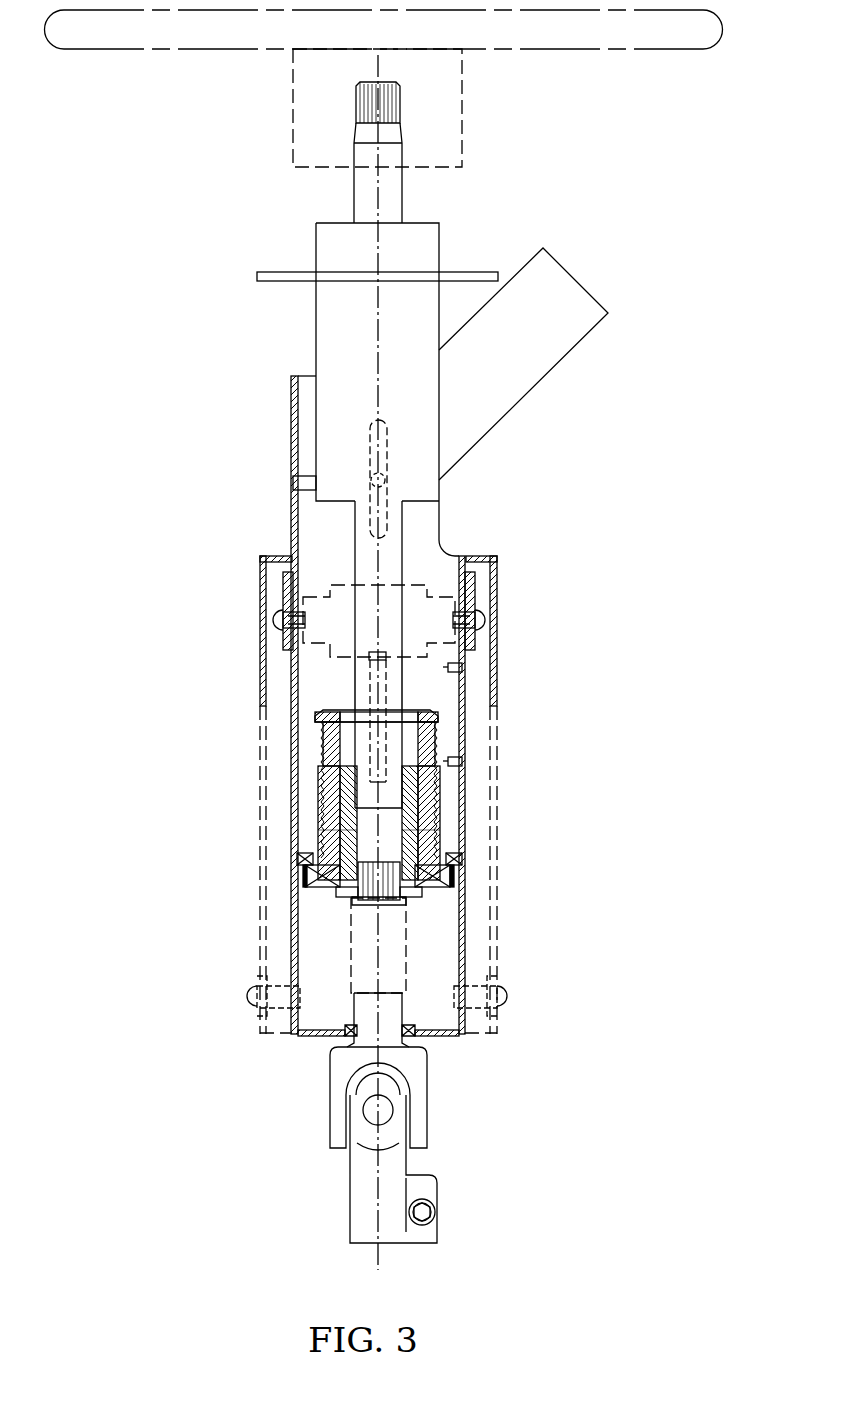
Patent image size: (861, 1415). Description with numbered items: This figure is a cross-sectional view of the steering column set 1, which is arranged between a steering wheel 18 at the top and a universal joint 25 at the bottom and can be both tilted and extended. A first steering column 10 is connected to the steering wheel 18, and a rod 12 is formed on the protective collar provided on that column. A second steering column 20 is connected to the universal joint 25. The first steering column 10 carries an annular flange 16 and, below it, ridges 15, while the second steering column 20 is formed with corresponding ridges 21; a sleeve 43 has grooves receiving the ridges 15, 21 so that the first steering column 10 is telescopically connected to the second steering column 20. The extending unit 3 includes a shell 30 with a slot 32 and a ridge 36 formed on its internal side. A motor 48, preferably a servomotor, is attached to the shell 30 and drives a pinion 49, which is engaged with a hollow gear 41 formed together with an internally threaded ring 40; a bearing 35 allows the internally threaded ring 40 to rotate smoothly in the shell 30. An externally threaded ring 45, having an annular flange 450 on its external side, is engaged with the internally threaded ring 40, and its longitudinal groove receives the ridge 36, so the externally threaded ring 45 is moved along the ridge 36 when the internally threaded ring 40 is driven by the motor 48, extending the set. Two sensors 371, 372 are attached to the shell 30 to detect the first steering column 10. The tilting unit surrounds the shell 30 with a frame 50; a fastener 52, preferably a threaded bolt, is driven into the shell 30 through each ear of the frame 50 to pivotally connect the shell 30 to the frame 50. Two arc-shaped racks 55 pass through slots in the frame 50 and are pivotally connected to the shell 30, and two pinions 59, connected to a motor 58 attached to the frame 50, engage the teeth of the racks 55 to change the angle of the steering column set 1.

The steering column set 1 is at (287, 328).
The extending unit 3 is at (378, 813).
The first steering column 10 is at (358, 548).
The rod 12 is at (378, 480).
The ridges 15 is at (345, 790).
The annular flange 16 is at (360, 692).
The steering wheel 18 is at (607, 44).
The second steering column 20 is at (398, 1013).
The ridges 21 is at (352, 903).
The universal joint 25 is at (450, 1167).
The shell 30 is at (465, 818).
The slot 32 is at (370, 445).
The bearing 35 is at (452, 858).
The ridge 36 is at (370, 668).
The internally threaded ring 40 is at (320, 808).
The gear 41 is at (303, 873).
The sleeve 43 is at (320, 837).
The externally threaded ring 45 is at (432, 742).
The motor 48 is at (406, 935).
The pinion 49 is at (402, 898).
The frame 50 is at (262, 742).
The fastener 52 is at (250, 996).
The racks 55 is at (290, 578).
The motor 58 is at (305, 598).
The pinions 59 is at (278, 620).
The sensor 371 is at (463, 668).
The sensor 372 is at (463, 758).
The annular flange 450 is at (440, 712).